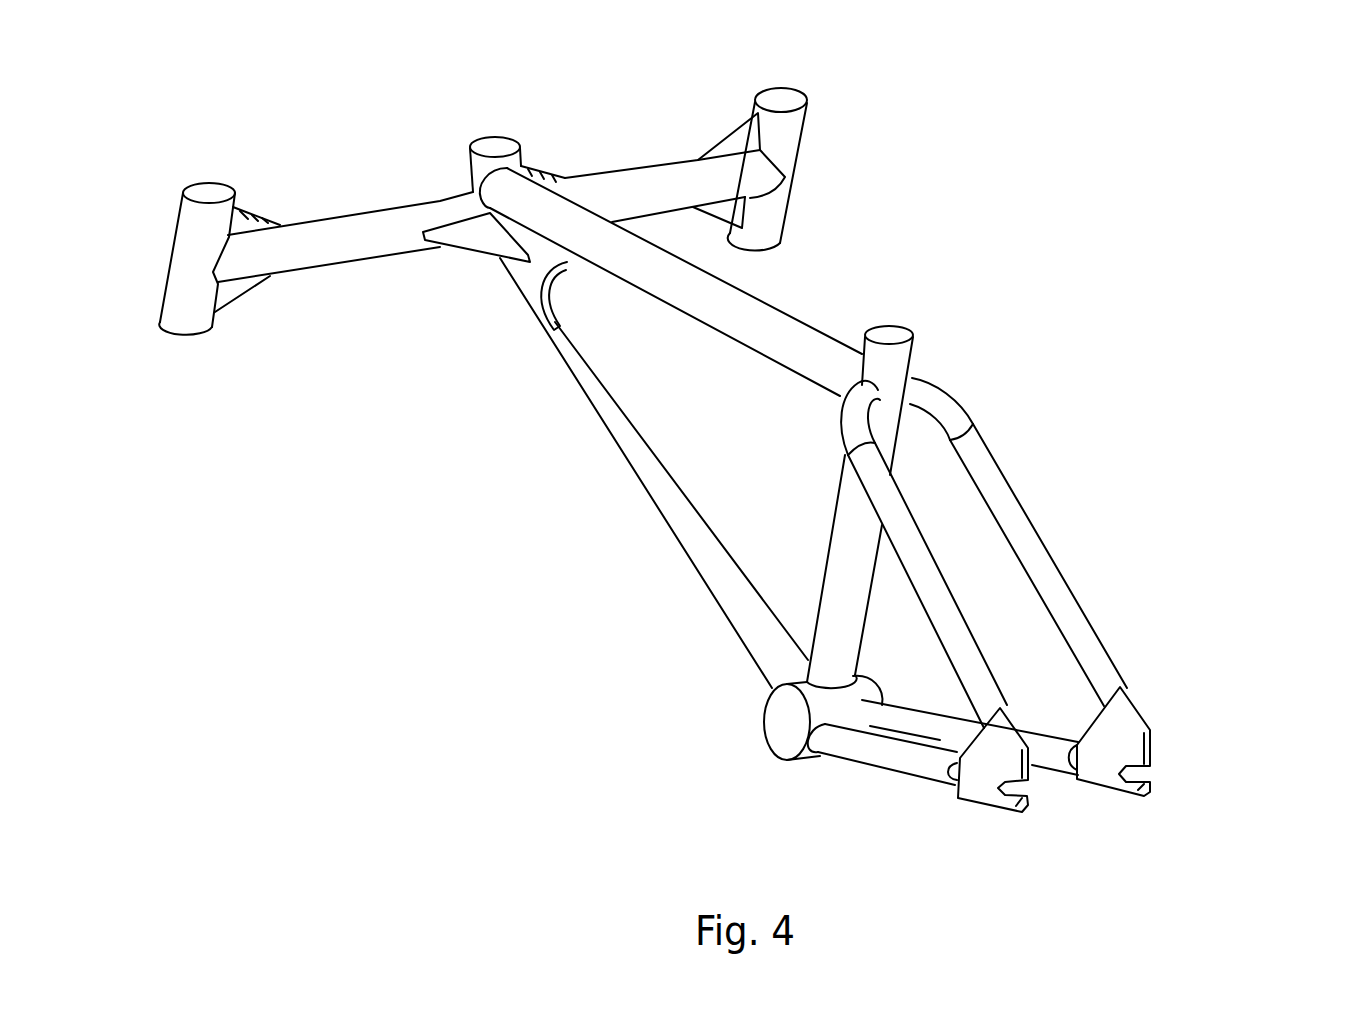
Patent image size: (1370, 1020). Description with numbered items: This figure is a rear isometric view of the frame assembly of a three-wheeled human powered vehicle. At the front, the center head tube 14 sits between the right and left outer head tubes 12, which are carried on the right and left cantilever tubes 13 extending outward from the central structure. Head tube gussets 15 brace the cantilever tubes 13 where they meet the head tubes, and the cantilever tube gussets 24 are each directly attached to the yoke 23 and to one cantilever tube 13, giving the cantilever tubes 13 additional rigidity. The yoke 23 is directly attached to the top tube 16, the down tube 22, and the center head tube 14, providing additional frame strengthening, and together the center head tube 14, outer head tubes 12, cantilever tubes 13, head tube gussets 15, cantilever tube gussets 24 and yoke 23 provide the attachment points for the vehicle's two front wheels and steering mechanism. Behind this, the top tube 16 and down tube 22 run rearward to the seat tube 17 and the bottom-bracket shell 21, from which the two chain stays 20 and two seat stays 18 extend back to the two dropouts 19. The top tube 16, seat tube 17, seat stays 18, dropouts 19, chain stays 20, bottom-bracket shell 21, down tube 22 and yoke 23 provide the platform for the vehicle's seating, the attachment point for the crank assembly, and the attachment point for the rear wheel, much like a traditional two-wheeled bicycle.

The outer head tube 12 is at (203, 237).
The cantilever tube 13 is at (342, 237).
The center head tube 14 is at (497, 149).
The head tube gusset 15 is at (727, 135).
The top tube 16 is at (783, 337).
The seat tube 17 is at (893, 358).
The seat stay 18 is at (1040, 565).
The dropout 19 is at (1112, 742).
The chain stay 20 is at (895, 756).
The bottom-bracket shell 21 is at (788, 721).
The down tube 22 is at (648, 482).
The yoke 23 is at (532, 288).
The cantilever tube gusset 24 is at (487, 232).